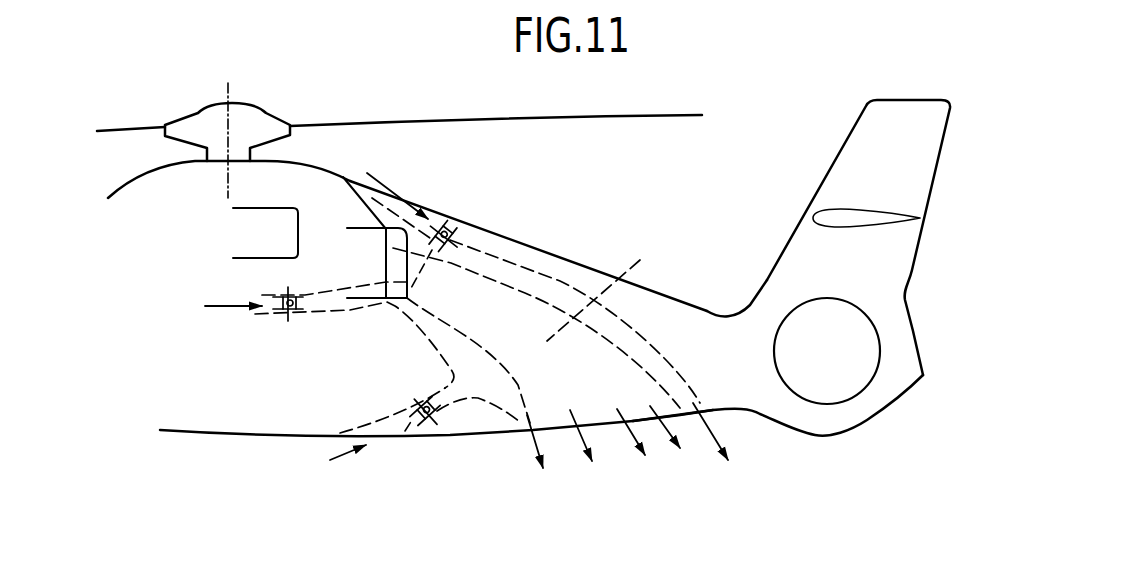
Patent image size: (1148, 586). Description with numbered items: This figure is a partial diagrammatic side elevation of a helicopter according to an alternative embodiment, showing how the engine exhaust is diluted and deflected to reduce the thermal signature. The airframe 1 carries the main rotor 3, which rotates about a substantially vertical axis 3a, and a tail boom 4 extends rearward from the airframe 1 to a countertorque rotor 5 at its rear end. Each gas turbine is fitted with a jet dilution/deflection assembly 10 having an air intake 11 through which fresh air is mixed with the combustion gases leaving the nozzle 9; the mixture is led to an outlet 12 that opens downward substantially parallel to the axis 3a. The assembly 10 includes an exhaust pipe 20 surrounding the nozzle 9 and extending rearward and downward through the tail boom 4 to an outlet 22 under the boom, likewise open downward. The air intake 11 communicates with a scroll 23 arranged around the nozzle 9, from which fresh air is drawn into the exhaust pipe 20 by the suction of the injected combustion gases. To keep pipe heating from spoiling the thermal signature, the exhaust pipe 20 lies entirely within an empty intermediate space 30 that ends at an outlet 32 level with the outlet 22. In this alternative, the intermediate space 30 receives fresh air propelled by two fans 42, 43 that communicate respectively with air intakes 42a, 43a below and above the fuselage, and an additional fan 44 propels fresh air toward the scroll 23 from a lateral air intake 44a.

The airframe 1 is at (165, 193).
The main rotor 3 is at (243, 118).
The axis of the main rotor 3a is at (224, 106).
The tail boom 4 is at (657, 320).
The countertorque rotor 5 is at (840, 380).
The nozzle 9 is at (441, 255).
The jet dilution/deflection assembly 10 is at (590, 263).
The air intake 11 is at (345, 181).
The outlet 12 is at (653, 447).
The exhaust pipe 20 is at (609, 292).
The outlet of the exhaust pipe 22 is at (605, 425).
The scroll 23 is at (392, 292).
The intermediate space 30 is at (677, 358).
The outlet of the intermediate space 32 is at (530, 418).
The fan 42 is at (430, 420).
The air intake 42a is at (382, 432).
The fan 43 is at (453, 226).
The air intake 43a is at (431, 217).
The additional fan 44 is at (289, 320).
The lateral air intake 44a is at (272, 318).